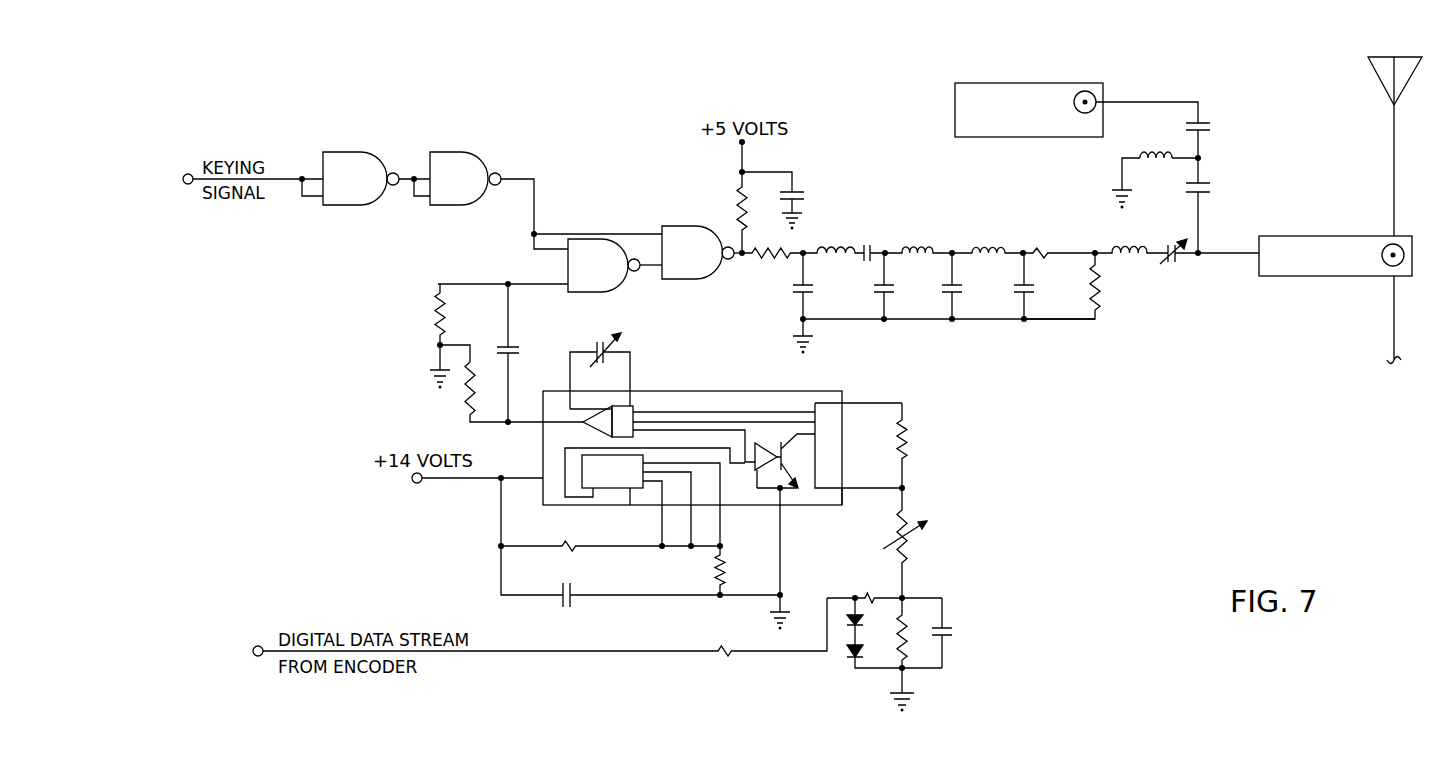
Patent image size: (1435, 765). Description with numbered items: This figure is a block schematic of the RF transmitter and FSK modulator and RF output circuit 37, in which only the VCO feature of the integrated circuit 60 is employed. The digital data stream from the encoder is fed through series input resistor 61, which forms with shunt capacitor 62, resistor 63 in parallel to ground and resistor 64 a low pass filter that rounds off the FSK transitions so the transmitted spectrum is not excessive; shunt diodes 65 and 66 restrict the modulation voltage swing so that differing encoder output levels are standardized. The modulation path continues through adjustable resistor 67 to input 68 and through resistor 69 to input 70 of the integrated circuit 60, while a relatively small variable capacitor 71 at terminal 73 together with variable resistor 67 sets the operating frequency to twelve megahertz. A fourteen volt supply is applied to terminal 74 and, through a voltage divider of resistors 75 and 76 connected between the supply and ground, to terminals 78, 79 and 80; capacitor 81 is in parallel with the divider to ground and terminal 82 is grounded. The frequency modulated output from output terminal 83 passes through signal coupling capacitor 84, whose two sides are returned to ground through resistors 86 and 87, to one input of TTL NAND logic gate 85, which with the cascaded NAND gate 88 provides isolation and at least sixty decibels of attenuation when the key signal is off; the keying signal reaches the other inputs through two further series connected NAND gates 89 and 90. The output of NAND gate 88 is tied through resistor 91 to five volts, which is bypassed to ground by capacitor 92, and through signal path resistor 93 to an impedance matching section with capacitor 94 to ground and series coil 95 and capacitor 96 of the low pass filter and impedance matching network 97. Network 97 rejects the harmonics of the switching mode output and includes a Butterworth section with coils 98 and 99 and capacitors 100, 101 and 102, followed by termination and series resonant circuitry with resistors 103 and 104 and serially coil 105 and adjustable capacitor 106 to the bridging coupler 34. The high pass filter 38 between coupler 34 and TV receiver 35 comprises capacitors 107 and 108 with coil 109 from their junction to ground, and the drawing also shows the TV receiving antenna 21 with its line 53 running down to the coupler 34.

The TV video receiving signal antenna 21 is at (1379, 89).
The coupler 34 is at (1297, 236).
The TV set 35 is at (973, 137).
The RF transmitter and FSK modulator section 37 is at (999, 389).
The high pass filter section 38 is at (1242, 162).
The antenna lead 53 is at (1394, 301).
The XR-210 integrated circuit 60 is at (720, 391).
The series input resistor 61 is at (728, 658).
The shunt capacitor 62 is at (948, 627).
The resistor 63 is at (908, 639).
The resistor 64 is at (892, 593).
The shunt diode 65 is at (862, 619).
The shunt diode 66 is at (855, 654).
The adjustable resistor 67 is at (907, 551).
The input 68 is at (845, 492).
The resistor 69 is at (912, 450).
The input 70 is at (848, 403).
The variable capacitor 71 is at (596, 349).
The terminal 73 is at (630, 381).
The terminal 74 is at (540, 476).
The resistor 75 is at (568, 545).
The resistor 76 is at (726, 568).
The terminal 78 is at (662, 541).
The terminal 79 is at (691, 541).
The terminal 80 is at (721, 545).
The capacitor 81 is at (572, 591).
The terminal 82 is at (782, 503).
The output terminal 83 is at (535, 425).
The signal coupling capacitor 84 is at (517, 345).
The TTL NAND logic gate 85 is at (583, 292).
The resistor 86 is at (465, 386).
The resistor 87 is at (446, 326).
The TTL NAND logic gate 88 is at (677, 278).
The NAND gate 89 is at (338, 152).
The NAND gate 90 is at (445, 152).
The resistor 91 is at (735, 216).
The capacitor 92 is at (803, 190).
The signal path resistor 93 is at (779, 258).
The capacitor 94 is at (795, 288).
The coil 95 is at (824, 250).
The capacitor 96 is at (871, 250).
The low pass filter and impedance matching network 97 is at (968, 204).
The coil 98 is at (904, 250).
The coil 99 is at (974, 250).
The capacitor 100 is at (890, 292).
The capacitor 101 is at (958, 292).
The capacitor 102 is at (1030, 292).
The resistor 103 is at (1038, 250).
The resistor 104 is at (1102, 300).
The coil 105 is at (1113, 262).
The adjustable capacitor 106 is at (1178, 259).
The capacitor 107 is at (1205, 193).
The capacitor 108 is at (1208, 122).
The coil 109 is at (1140, 152).